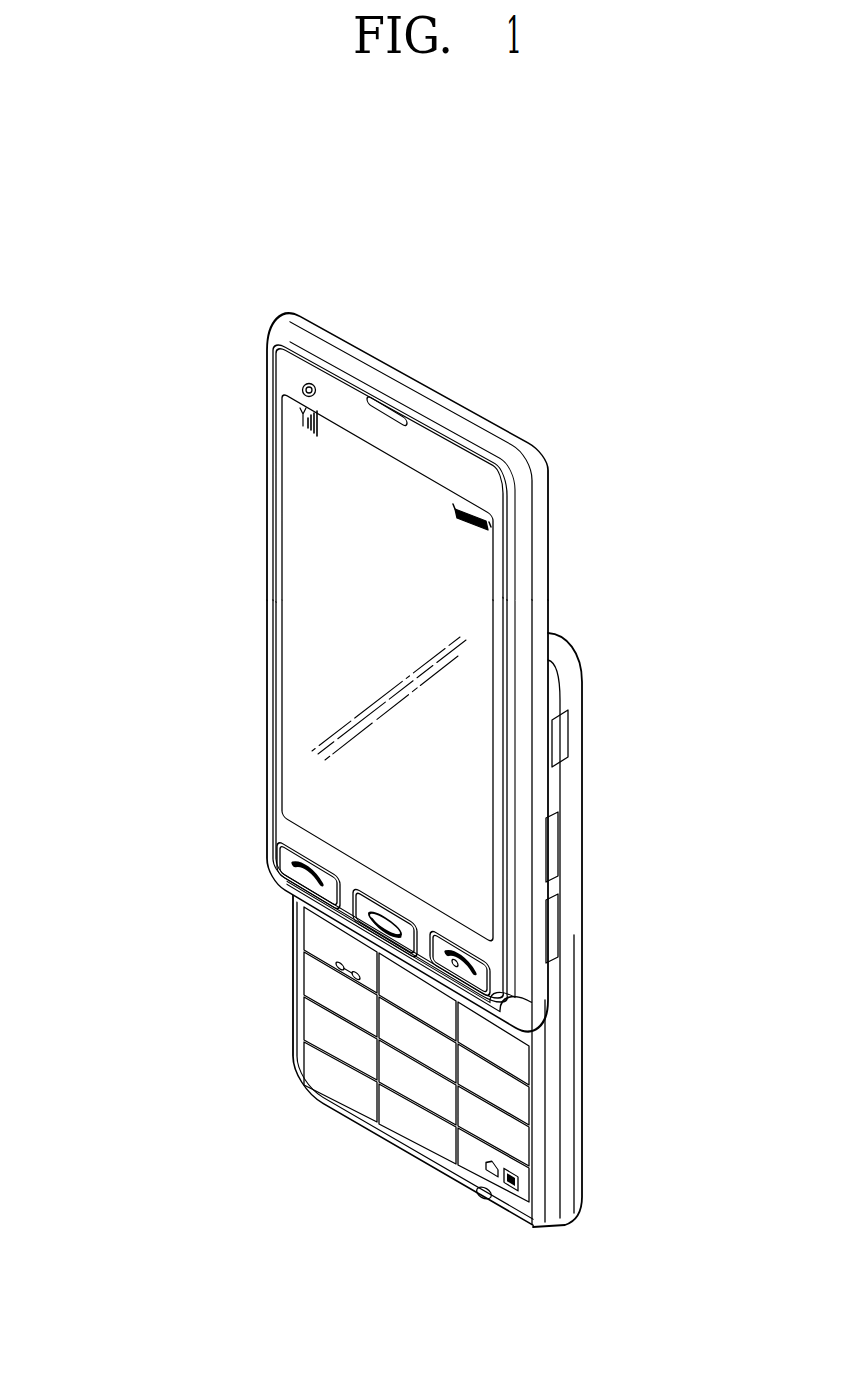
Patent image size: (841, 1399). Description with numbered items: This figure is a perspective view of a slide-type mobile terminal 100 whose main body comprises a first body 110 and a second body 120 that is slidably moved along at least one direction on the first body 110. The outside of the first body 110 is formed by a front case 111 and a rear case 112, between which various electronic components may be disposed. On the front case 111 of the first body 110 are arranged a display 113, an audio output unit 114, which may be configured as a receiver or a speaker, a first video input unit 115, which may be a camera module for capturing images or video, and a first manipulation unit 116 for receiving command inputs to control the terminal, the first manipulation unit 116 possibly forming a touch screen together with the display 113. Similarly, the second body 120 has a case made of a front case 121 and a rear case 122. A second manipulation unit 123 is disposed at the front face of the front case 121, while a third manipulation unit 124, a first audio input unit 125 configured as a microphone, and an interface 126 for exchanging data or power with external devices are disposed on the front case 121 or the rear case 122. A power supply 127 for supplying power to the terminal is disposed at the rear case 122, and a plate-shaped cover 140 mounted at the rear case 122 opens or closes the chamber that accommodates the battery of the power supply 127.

The mobile terminal 100 is at (128, 292).
The first body 110 is at (530, 351).
The front case 111 is at (428, 440).
The rear case 112 is at (517, 446).
The display 113 is at (302, 592).
The audio output unit 114 is at (395, 412).
The first video input unit 115 is at (314, 385).
The first manipulation unit 116 is at (290, 859).
The second body 120 is at (656, 608).
The front case 121 is at (553, 691).
The rear case 122 is at (566, 662).
The second manipulation unit 123 is at (310, 938).
The third manipulation unit 124 is at (557, 846).
The first audio input unit 125 is at (482, 1199).
The interface 126 is at (563, 741).
The power supply 127 is at (577, 1043).
The cover 140 is at (259, 405).